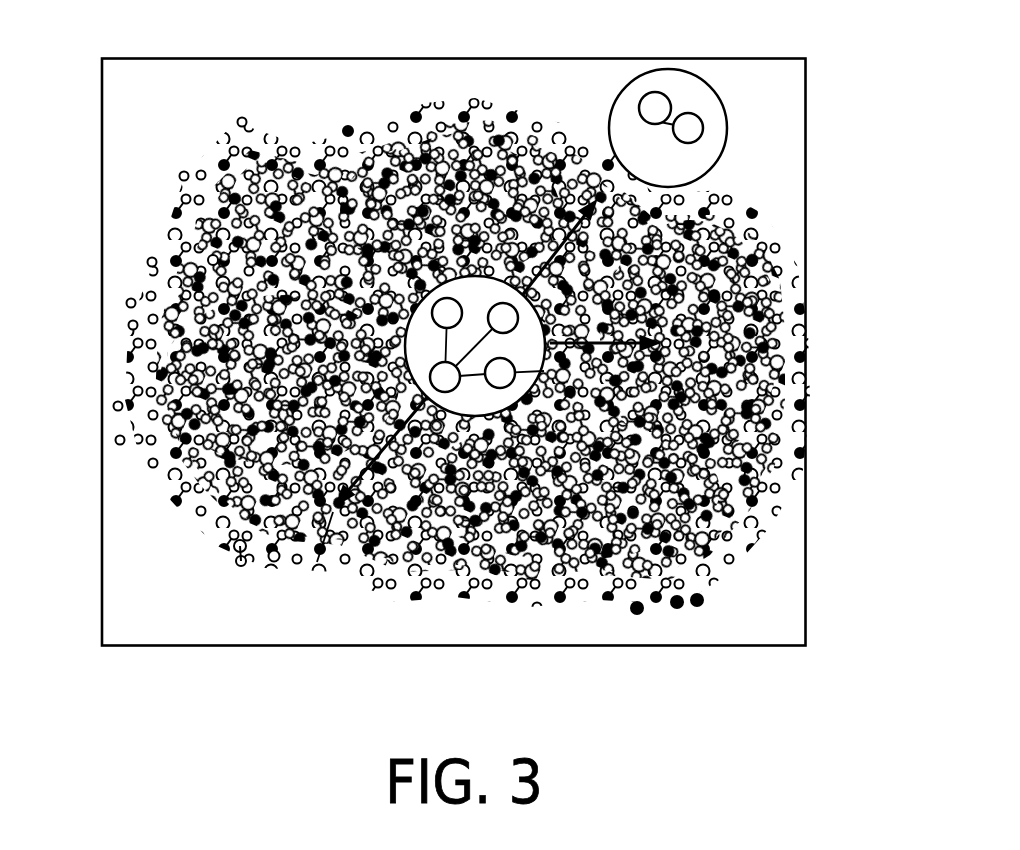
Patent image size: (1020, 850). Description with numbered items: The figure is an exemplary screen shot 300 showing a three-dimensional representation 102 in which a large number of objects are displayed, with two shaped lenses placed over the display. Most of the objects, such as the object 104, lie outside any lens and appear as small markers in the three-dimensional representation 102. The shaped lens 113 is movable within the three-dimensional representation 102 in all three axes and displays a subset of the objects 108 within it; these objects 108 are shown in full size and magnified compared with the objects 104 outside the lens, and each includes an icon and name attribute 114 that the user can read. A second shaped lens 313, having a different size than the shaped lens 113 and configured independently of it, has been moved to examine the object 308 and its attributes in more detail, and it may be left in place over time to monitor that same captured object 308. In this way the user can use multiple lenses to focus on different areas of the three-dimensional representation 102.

The screen shot 300 is at (467, 30).
The 3D representation 102 is at (101, 156).
The object 104 is at (209, 257).
The object 108 is at (440, 372).
The shaped lens 113 is at (540, 318).
The name attribute 114 is at (517, 395).
The object 308 is at (703, 128).
The second shaped lens 313 is at (738, 158).